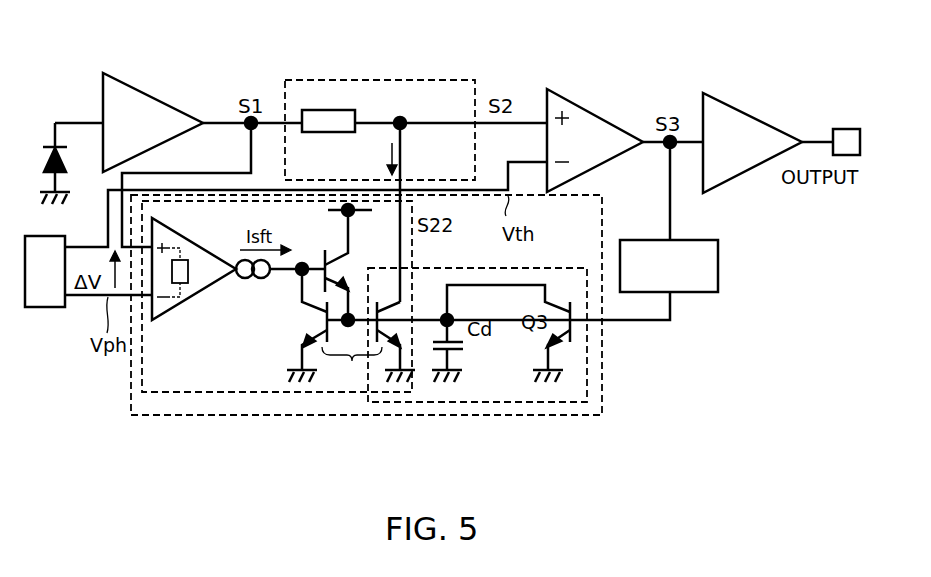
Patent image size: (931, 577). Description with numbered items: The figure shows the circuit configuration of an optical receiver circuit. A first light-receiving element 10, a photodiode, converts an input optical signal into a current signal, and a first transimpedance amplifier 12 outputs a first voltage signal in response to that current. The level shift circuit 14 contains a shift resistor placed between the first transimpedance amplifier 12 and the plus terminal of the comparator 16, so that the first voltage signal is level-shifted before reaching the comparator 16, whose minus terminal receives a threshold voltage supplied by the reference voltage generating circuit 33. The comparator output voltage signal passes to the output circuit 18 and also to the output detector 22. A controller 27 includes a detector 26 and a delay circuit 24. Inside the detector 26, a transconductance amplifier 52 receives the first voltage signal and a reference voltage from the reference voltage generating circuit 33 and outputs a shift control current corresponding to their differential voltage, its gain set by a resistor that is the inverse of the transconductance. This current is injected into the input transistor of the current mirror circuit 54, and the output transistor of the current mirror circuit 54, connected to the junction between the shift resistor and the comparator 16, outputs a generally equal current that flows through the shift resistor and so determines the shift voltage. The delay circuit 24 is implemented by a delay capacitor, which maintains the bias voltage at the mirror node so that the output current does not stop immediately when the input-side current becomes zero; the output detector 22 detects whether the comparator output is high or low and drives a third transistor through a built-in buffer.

The first light-receiving element 10 is at (72, 150).
The first transimpedance amplifier 12 is at (133, 100).
The level shift circuit 14 is at (325, 80).
The comparator 16 is at (583, 118).
The output circuit 18 is at (732, 118).
The output detector 22 is at (716, 270).
The delay circuit 24 is at (533, 402).
The detector 26 is at (213, 392).
The controller 27 is at (603, 372).
The reference voltage generating circuit 33 is at (45, 308).
The transconductance amplifier 52 is at (210, 293).
The current mirror circuit 54 is at (352, 361).